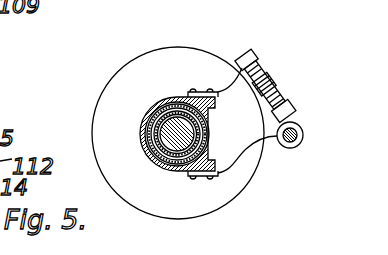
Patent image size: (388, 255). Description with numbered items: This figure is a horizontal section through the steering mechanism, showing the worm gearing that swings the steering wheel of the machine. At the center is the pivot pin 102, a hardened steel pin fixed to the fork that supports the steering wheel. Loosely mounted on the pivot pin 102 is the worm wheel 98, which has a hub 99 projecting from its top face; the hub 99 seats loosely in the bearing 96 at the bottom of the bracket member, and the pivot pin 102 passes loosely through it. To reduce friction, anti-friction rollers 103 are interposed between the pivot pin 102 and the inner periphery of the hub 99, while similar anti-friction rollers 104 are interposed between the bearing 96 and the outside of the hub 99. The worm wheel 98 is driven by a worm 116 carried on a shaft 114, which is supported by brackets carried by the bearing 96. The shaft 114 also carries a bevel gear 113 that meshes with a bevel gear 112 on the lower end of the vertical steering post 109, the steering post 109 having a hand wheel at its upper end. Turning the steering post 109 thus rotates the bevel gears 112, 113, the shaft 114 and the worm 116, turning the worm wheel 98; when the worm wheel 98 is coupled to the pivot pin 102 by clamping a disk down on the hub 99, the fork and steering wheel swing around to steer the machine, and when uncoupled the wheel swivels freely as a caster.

The worm wheel 98 is at (144, 68).
The bearing 96 is at (142, 119).
The pivot pin 102 is at (174, 112).
The hub 99 is at (148, 149).
The anti-friction rollers 103 is at (158, 149).
The anti-friction rollers 104 is at (173, 172).
The bevel gear 112 is at (266, 104).
The steering post 109 is at (279, 142).
The shaft 114 is at (245, 62).
The worm 116 is at (268, 83).
The bevel gear 113 is at (300, 101).